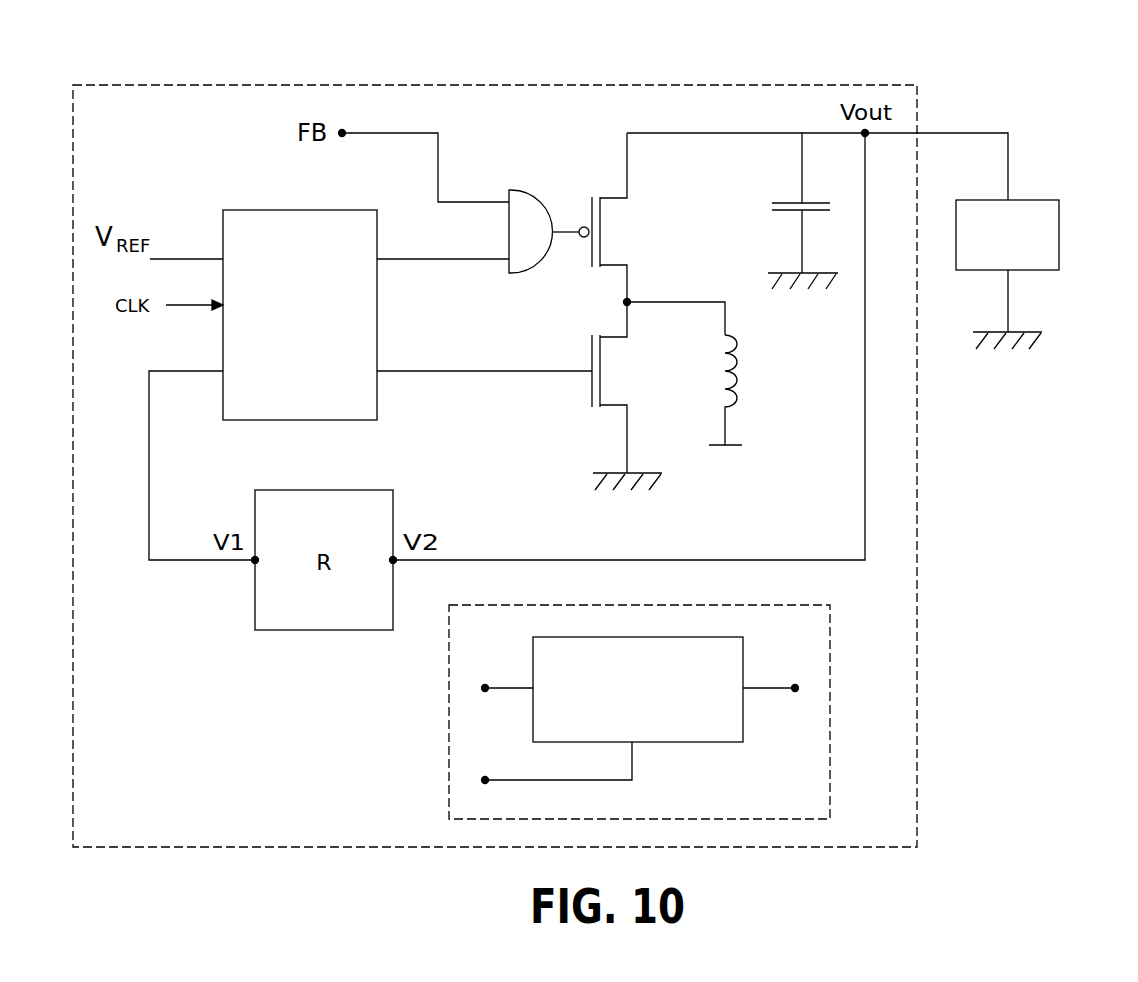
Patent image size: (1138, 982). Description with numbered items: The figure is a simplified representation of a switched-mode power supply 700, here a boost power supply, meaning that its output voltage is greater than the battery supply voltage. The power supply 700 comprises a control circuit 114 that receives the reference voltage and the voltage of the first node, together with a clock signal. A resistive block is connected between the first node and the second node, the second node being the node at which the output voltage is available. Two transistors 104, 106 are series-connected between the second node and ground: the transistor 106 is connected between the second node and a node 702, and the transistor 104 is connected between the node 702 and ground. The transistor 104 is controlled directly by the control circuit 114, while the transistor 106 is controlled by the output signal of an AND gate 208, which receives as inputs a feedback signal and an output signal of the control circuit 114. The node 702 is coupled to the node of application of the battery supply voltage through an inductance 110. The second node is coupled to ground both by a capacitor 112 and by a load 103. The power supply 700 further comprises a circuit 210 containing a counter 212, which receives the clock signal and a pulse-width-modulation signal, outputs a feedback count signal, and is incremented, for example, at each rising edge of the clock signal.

The switched-mode power supply 700 is at (538, 85).
The control circuit 114 is at (250, 208).
The AND gate 208 is at (518, 190).
The transistor 106 is at (605, 232).
The node 702 is at (632, 300).
The capacitor 112 is at (790, 200).
The load 103 is at (1058, 219).
The inductance 110 is at (742, 366).
The transistor 104 is at (605, 410).
The circuit 210 is at (833, 655).
The counter 212 is at (705, 742).